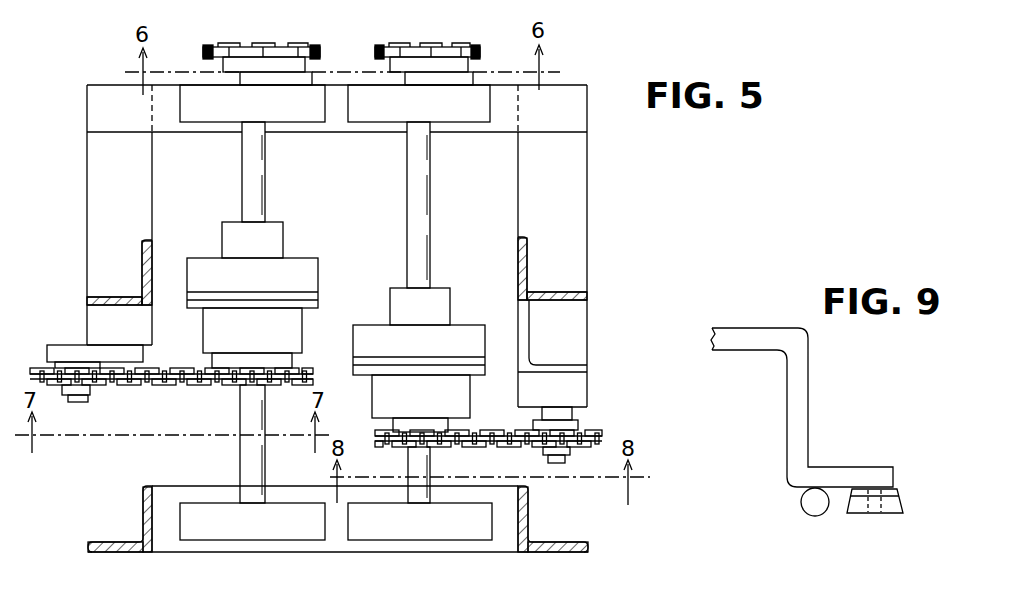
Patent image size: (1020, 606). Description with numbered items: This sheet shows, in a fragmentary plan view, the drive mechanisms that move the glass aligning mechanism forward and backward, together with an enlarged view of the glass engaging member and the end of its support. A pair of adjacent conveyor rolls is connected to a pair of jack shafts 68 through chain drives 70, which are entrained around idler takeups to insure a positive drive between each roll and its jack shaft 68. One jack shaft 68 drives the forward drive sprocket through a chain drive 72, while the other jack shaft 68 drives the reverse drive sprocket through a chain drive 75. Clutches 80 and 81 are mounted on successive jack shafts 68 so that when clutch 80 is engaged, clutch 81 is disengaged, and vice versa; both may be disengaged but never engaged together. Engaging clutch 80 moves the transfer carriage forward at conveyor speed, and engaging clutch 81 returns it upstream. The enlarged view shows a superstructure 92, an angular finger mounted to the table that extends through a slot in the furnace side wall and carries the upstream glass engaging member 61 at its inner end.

In FIG. 5, the jack shaft 68 is at (257, 170).
In FIG. 5, the chain drive 70 is at (372, 50).
In FIG. 5, the chain drive 72 is at (172, 386).
In FIG. 5, the chain drive 75 is at (493, 430).
In FIG. 5, the clutch 80 is at (321, 270).
In FIG. 5, the clutch 81 is at (355, 347).
In FIG. 9, the superstructure 92 is at (803, 397).
In FIG. 9, the upstream glass engaging member 61 is at (903, 498).